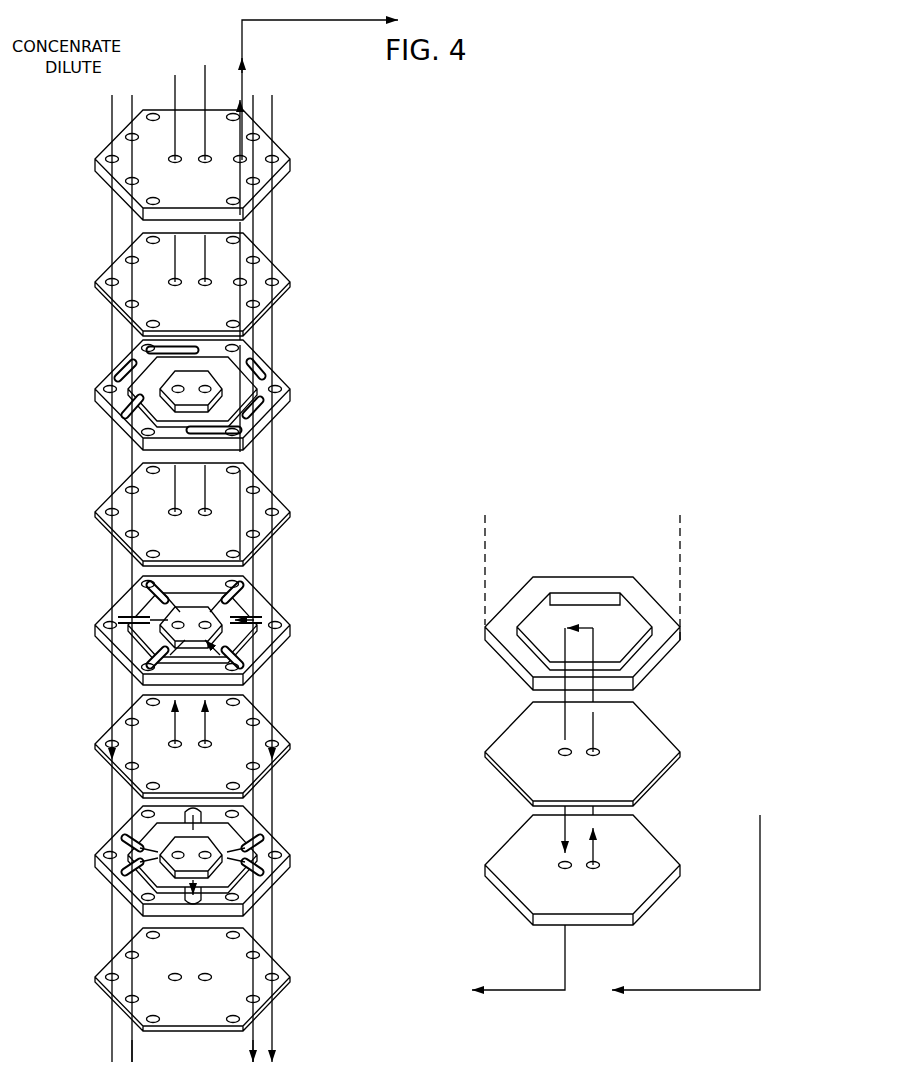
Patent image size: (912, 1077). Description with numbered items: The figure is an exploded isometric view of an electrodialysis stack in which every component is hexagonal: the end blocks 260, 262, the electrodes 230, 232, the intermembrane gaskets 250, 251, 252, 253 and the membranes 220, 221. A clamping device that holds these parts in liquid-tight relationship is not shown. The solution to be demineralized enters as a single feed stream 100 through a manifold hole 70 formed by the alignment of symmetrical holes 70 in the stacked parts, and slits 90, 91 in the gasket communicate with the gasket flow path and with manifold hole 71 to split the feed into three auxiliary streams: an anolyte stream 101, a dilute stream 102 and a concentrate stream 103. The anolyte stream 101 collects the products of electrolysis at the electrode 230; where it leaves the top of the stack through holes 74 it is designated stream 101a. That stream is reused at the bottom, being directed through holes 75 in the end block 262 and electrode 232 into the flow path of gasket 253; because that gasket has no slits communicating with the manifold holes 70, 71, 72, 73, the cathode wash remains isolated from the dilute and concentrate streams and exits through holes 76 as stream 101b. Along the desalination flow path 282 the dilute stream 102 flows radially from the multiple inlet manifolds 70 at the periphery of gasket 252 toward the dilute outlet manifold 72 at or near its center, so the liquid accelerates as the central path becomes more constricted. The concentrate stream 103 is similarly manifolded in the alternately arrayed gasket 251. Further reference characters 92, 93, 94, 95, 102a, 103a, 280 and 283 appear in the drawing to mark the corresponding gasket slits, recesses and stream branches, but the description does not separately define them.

The manifold hole 70 is at (106, 159).
The manifold hole 71 is at (132, 136).
The dilute stream outlet manifold 72 is at (170, 159).
The manifold hole 73 is at (205, 165).
The hole 74 is at (238, 155).
The hole 75 is at (598, 750).
The hole 76 is at (560, 750).
The slit 90 is at (165, 392).
The slit 91 is at (160, 350).
The central block 92 is at (235, 600).
The slot 93 is at (250, 618).
The slot 94 is at (255, 840).
The central block 95 is at (160, 850).
The feed stream 100 is at (112, 104).
The anolyte stream 101 is at (130, 402).
The anolyte stream effluent 101a is at (243, 100).
The catholyte stream effluent 101b is at (585, 626).
The dilute stream 102 is at (125, 380).
The dilute flow path 102a is at (175, 85).
The concentrate stream 103 is at (112, 440).
The concentrate flow path 103a is at (205, 70).
The membrane 220 is at (280, 517).
The membrane 221 is at (278, 738).
The electrode 230 is at (276, 280).
The electrode 232 is at (660, 752).
The intermembrane gasket 250 is at (188, 388).
The intermembrane gasket 251 is at (188, 630).
The intermembrane gasket 252 is at (188, 857).
The intermembrane gasket 253 is at (640, 682).
The end block 260 is at (278, 165).
The end block 262 is at (660, 858).
The recess 280 is at (152, 425).
The desalination flow path 282 is at (160, 828).
The channel 283 is at (625, 655).